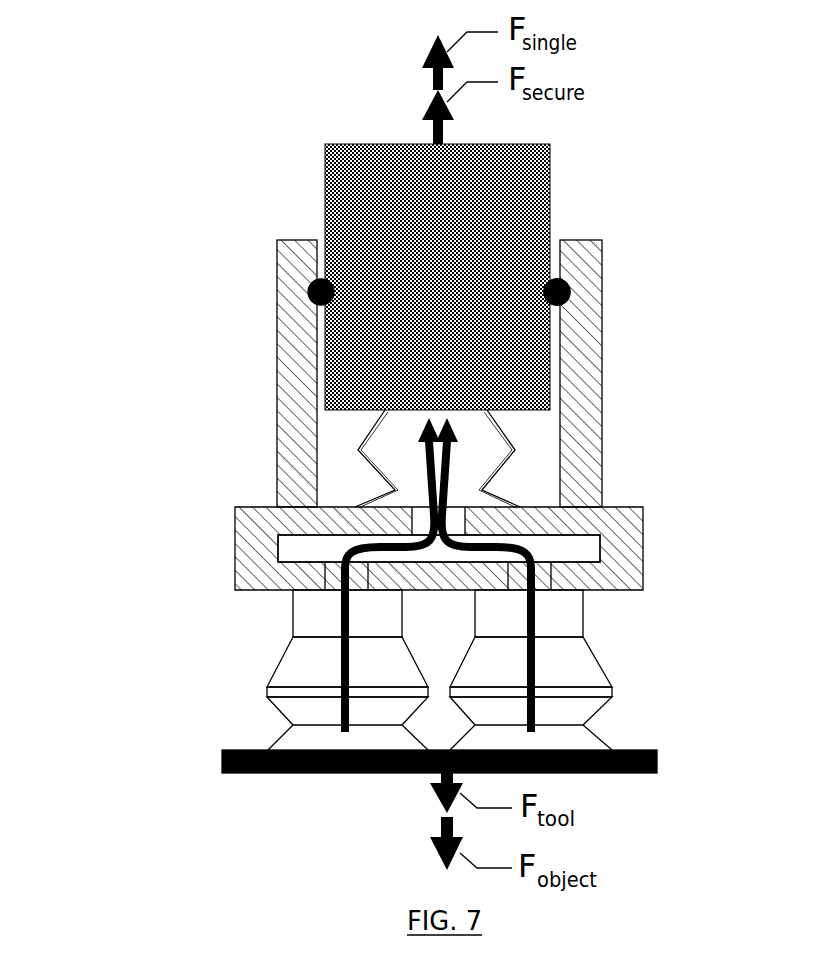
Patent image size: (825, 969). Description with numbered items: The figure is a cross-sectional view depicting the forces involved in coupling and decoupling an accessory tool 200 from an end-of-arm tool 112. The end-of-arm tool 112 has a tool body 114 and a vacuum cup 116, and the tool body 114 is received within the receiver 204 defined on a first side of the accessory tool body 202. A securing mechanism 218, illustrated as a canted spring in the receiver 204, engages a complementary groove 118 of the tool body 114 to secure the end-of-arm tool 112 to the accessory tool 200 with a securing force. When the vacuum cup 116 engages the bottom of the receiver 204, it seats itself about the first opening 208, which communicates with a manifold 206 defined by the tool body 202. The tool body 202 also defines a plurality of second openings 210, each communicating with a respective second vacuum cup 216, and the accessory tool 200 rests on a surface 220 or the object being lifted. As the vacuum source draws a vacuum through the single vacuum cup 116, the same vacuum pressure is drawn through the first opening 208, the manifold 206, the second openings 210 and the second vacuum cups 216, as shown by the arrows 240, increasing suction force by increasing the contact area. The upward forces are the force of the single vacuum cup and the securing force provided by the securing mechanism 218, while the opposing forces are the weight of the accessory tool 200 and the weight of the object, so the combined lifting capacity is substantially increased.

The end-of-arm tool 112 is at (389, 263).
The tool body 114 is at (494, 263).
The vacuum cup 116 is at (421, 470).
The complementary groove 118 is at (485, 245).
The accessory tool 200 is at (346, 373).
The tool body 202 is at (391, 524).
The receiver 204 is at (348, 442).
The manifold 206 is at (491, 511).
The first opening 208 is at (525, 499).
The second openings 210 is at (438, 612).
The second vacuum cups 216 is at (439, 685).
The securing mechanism 218 is at (618, 265).
The surface 220 is at (395, 789).
The arrows 240 is at (431, 663).